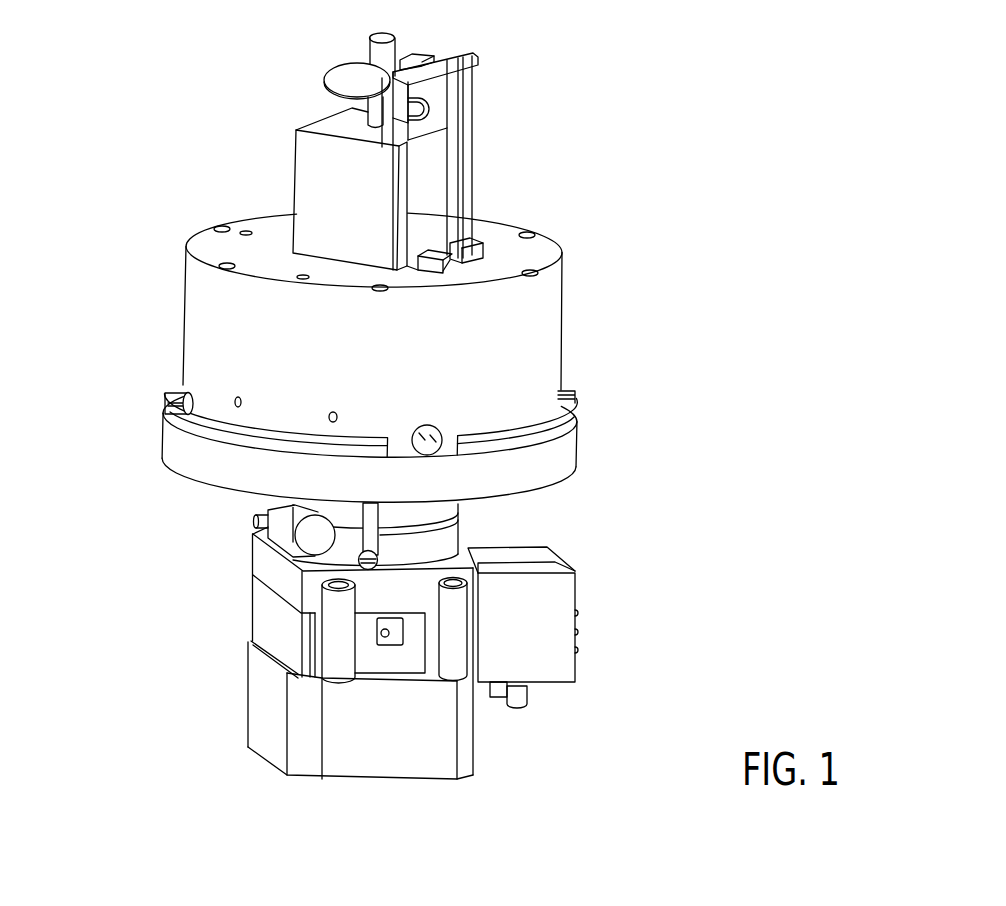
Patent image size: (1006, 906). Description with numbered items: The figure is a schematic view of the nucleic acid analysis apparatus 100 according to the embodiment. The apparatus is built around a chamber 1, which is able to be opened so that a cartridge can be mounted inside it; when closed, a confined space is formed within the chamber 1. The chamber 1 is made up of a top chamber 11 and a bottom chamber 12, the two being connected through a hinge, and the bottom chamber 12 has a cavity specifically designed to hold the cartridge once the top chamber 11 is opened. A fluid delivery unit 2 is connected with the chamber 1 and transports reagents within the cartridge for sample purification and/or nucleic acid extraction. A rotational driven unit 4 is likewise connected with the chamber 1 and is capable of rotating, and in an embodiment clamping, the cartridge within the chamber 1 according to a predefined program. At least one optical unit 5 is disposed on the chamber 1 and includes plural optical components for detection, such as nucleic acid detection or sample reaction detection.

The nucleic acid analysis apparatus 100 is at (977, 73).
The chamber 1 is at (725, 337).
The top chamber 11 is at (528, 352).
The bottom chamber 12 is at (552, 457).
The fluid delivery unit 2 is at (265, 570).
The rotational driven unit 4 is at (313, 183).
The optical unit 5 is at (177, 391).